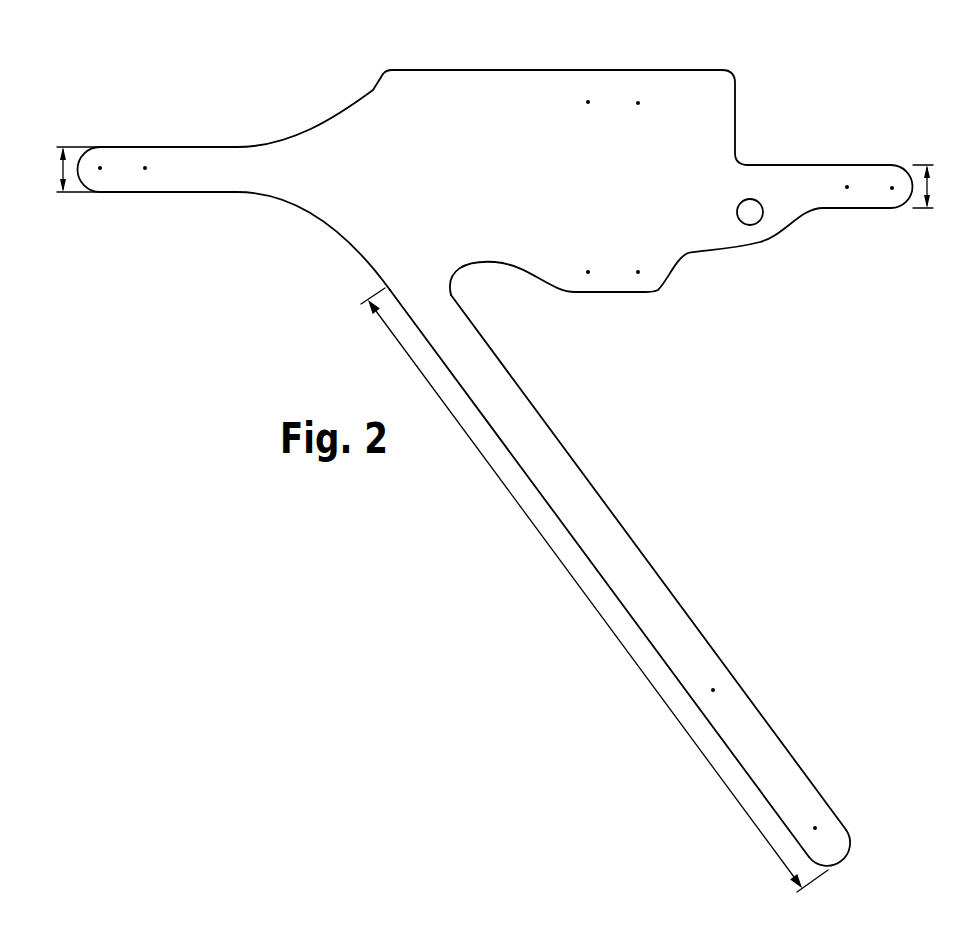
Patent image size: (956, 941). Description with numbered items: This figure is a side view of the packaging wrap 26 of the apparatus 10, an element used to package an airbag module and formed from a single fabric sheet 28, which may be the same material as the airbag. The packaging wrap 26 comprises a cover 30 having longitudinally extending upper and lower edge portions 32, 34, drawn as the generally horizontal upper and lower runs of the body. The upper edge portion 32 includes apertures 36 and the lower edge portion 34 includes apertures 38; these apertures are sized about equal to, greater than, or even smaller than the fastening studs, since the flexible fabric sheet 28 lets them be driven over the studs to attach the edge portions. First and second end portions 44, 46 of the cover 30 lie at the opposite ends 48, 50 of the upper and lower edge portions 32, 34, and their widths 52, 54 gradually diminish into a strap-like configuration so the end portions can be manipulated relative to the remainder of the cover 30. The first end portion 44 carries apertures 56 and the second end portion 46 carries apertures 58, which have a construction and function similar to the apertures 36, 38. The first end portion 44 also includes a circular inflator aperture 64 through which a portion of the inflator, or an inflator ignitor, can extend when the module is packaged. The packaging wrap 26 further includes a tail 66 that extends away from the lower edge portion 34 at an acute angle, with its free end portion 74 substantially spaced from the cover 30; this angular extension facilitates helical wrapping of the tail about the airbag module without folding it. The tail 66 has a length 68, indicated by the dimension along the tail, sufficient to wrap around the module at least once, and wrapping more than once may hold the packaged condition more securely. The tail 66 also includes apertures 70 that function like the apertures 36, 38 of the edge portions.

The apparatus 10 is at (226, 68).
The packaging wrap 26 is at (385, 98).
The fabric sheet 28 is at (447, 95).
The cover 30 is at (505, 142).
The upper edge portion 32 is at (703, 93).
The lower edge portion 34 is at (658, 265).
The apertures 36 is at (588, 102).
The apertures 38 is at (588, 272).
The first end portion 44 is at (880, 175).
The second end portion 46 is at (187, 173).
The end 48 is at (853, 222).
The end 50 is at (128, 204).
The width 52 is at (930, 184).
The width 54 is at (63, 170).
The apertures 56 is at (847, 187).
The apertures 58 is at (100, 168).
The inflator aperture 64 is at (752, 225).
The tail 66 is at (602, 530).
The length 68 is at (585, 593).
The apertures 70 is at (713, 690).
The free end portion 74 is at (833, 850).